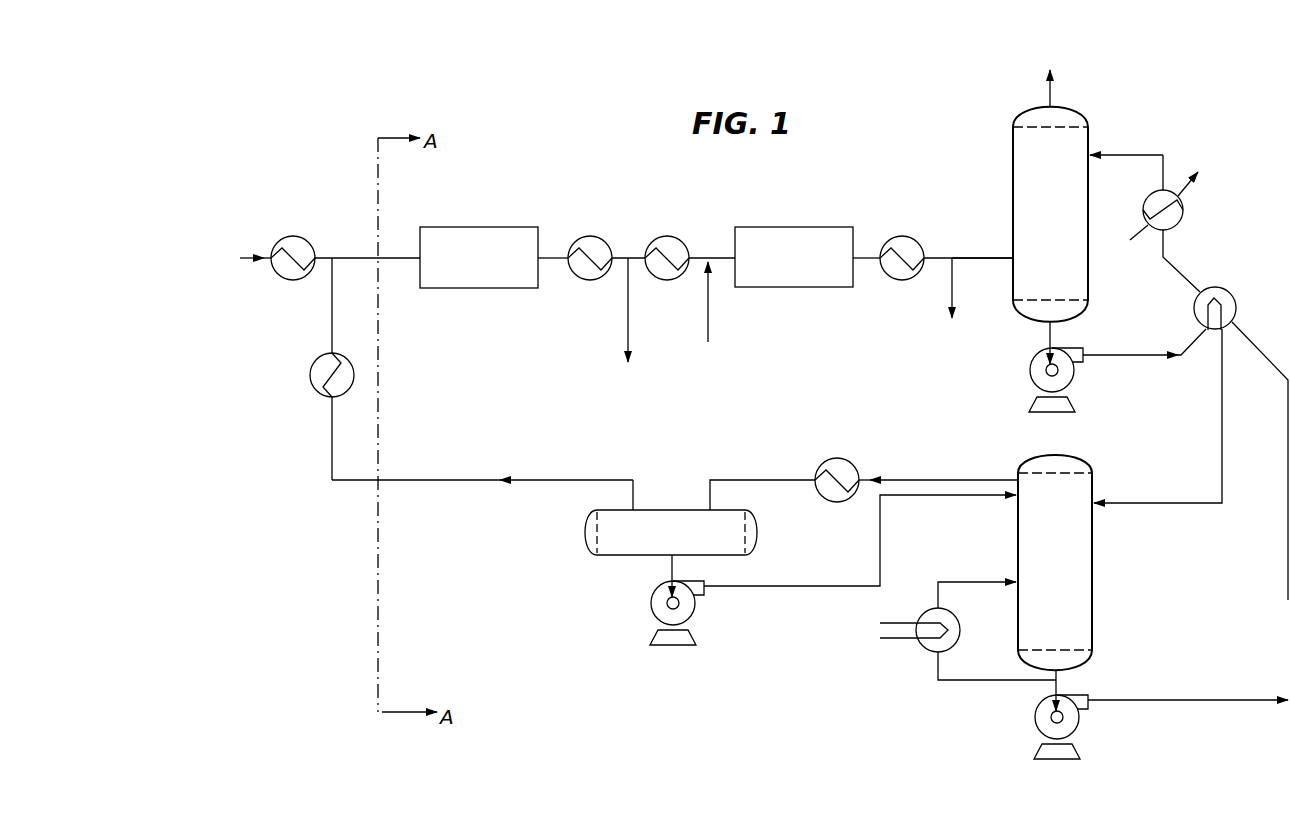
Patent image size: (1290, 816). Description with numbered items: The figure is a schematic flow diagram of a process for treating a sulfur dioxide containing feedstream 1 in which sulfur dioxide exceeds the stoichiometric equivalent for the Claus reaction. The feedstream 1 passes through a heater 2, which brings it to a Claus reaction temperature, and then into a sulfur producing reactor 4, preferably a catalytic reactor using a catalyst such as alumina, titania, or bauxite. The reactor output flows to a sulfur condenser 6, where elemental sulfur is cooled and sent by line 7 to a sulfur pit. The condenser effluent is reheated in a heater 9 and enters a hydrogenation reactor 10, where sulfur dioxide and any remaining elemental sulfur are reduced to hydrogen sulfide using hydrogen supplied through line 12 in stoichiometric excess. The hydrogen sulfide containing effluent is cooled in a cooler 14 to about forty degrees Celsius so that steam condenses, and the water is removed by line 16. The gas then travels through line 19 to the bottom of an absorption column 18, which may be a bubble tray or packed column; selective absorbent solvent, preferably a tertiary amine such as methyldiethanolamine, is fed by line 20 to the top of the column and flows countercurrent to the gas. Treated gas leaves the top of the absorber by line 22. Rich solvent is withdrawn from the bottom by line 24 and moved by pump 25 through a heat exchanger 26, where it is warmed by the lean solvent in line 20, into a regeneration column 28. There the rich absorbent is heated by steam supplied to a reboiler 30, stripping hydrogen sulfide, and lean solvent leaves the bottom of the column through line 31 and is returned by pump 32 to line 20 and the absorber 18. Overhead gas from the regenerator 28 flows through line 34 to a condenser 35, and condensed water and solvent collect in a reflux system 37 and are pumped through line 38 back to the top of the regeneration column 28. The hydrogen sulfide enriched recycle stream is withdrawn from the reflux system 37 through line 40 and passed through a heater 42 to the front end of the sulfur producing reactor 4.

The sulfur dioxide containing feedstream 1 is at (265, 256).
The heater 2 is at (293, 281).
The sulfur producing reactor 4 is at (472, 227).
The sulfur condenser 6 is at (582, 279).
The line 7 is at (628, 303).
The heater 9 is at (664, 280).
The hydrogenation reactor 10 is at (780, 226).
The line 12 is at (710, 318).
The cooler 14 is at (893, 279).
The line 16 is at (955, 296).
The absorption column 18 is at (1061, 223).
The line 19 is at (974, 257).
The line 20 is at (1128, 156).
The line 22 is at (1052, 94).
The line 24 is at (1057, 334).
The pump 25 is at (1030, 374).
The heat exchanger 26 is at (1194, 308).
The regeneration column 28 is at (1062, 553).
The reboiler 30 is at (959, 623).
The line 31 is at (1060, 684).
The pump 32 is at (1035, 724).
The line 34 is at (930, 478).
The condenser 35 is at (814, 496).
The reflux system 37 is at (680, 545).
The line 38 is at (880, 566).
The line 40 is at (556, 478).
The heater 42 is at (318, 392).